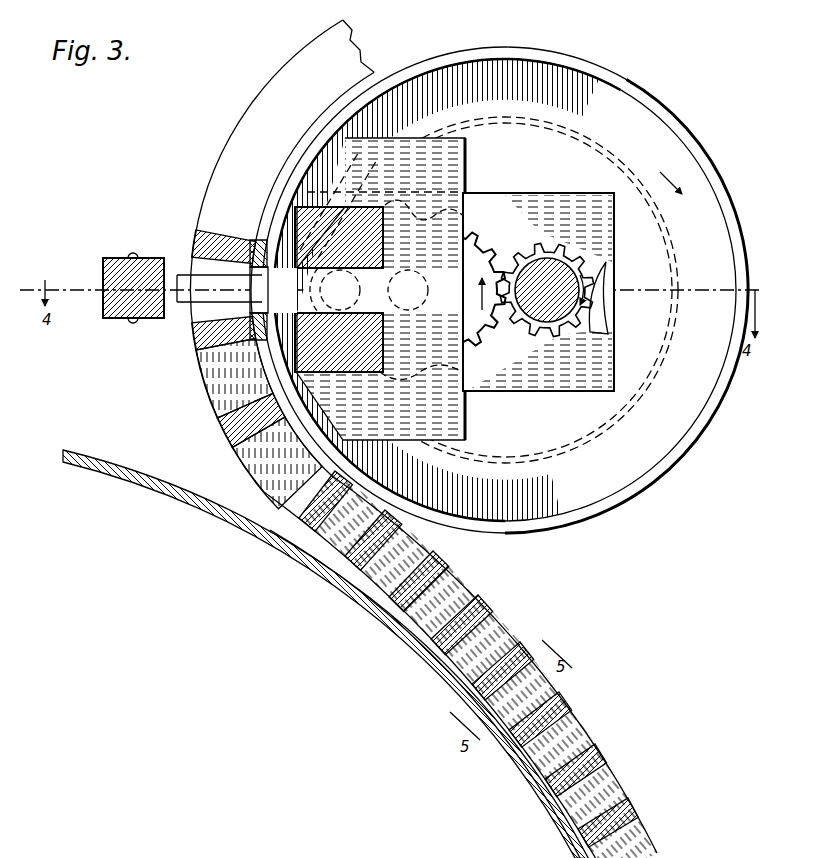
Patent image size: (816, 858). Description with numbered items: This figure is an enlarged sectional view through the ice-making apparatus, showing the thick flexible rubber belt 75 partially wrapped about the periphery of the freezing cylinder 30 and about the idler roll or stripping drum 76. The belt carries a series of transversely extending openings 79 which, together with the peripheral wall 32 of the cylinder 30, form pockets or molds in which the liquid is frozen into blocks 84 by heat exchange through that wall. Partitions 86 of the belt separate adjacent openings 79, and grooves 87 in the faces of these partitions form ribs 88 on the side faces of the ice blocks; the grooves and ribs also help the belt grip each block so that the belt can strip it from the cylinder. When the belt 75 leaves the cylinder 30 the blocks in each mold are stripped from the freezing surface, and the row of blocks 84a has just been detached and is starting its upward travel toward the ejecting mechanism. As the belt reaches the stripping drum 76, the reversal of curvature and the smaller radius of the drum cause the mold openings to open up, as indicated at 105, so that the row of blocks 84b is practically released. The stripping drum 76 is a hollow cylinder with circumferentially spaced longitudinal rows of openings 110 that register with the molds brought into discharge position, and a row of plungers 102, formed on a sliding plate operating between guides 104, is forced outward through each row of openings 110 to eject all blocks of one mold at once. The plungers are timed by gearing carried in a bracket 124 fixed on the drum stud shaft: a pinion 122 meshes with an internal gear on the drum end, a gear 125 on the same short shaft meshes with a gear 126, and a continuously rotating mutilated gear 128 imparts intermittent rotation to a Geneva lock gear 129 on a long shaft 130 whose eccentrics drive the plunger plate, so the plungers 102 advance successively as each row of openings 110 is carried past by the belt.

The cylinder 30 is at (205, 514).
The peripheral wall 32 is at (352, 588).
The flexible belt 75 is at (302, 88).
The idler roll (stripping drum) 76 is at (592, 78).
The openings 79 is at (480, 598).
The blocks 84 is at (103, 268).
The row of blocks 84a is at (358, 600).
The row of blocks 84b is at (222, 368).
The partitions 86 is at (278, 497).
The grooves 87 is at (236, 250).
The ribs 88 is at (134, 256).
The plungers 102 is at (180, 278).
The guides 104 is at (315, 210).
The opened mold openings 105 is at (249, 410).
The openings 110 is at (258, 298).
The pinion 122 is at (385, 235).
The bracket 124 is at (540, 390).
The gear 125 is at (385, 345).
The gear 126 is at (417, 282).
The mutilated gear 128 is at (480, 222).
The Geneva lock gear 129 is at (538, 342).
The long shaft 130 is at (565, 272).